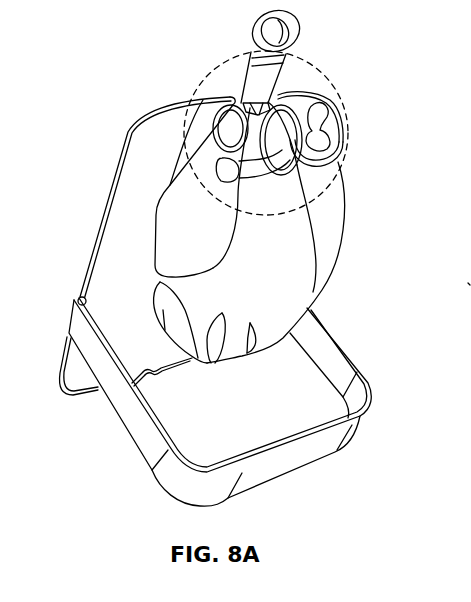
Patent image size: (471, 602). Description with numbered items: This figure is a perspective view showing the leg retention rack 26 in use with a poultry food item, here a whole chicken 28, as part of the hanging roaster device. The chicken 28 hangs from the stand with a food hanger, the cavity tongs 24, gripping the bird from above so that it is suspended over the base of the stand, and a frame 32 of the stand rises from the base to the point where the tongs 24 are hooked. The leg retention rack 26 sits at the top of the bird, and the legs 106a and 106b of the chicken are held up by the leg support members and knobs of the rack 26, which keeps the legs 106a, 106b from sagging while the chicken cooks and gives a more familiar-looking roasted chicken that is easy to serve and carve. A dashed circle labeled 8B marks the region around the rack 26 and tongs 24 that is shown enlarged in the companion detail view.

The cavity tongs 24 is at (297, 34).
The leg retention rack 26 is at (283, 98).
The whole chicken 28 is at (228, 231).
The frame 32 is at (128, 133).
The leg 106a is at (153, 233).
The leg 106b is at (344, 190).
The detail view circle 8B is at (352, 120).